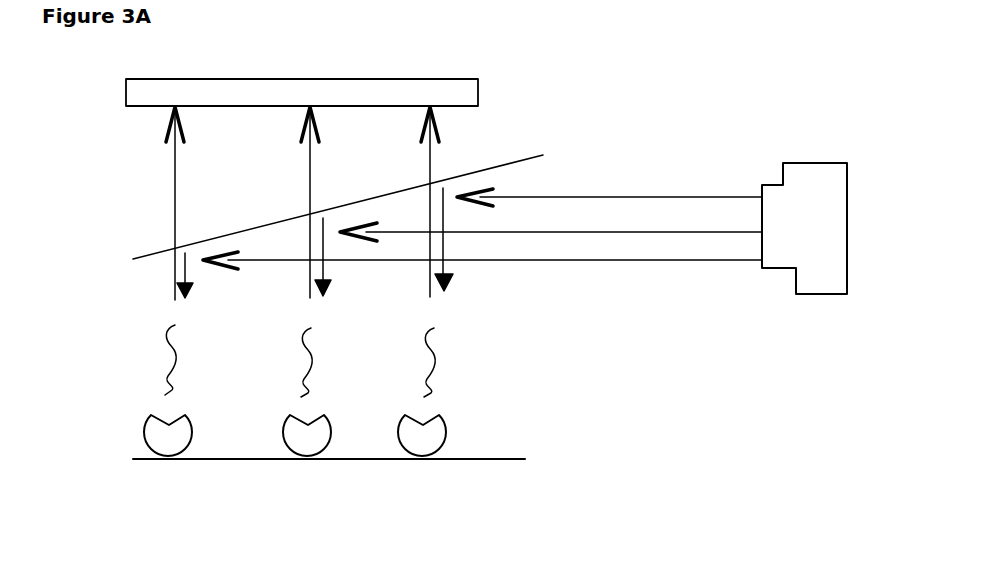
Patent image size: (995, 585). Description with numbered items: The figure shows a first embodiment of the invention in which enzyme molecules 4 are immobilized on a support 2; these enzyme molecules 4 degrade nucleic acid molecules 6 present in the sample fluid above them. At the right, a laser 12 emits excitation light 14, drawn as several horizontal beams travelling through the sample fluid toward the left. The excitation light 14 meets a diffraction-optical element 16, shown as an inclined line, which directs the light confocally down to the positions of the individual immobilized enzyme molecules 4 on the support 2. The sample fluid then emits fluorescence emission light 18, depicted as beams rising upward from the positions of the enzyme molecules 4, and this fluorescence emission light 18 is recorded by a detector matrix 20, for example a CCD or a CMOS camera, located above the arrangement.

The support 2 is at (493, 470).
The enzyme molecules 4 is at (463, 428).
The nucleic acid molecules 6 is at (450, 370).
The laser 12 is at (823, 294).
The excitation light 14 is at (648, 265).
The diffraction-optical element 16 is at (146, 268).
The fluorescence emission light 18 is at (168, 158).
The detector matrix 20 is at (118, 87).